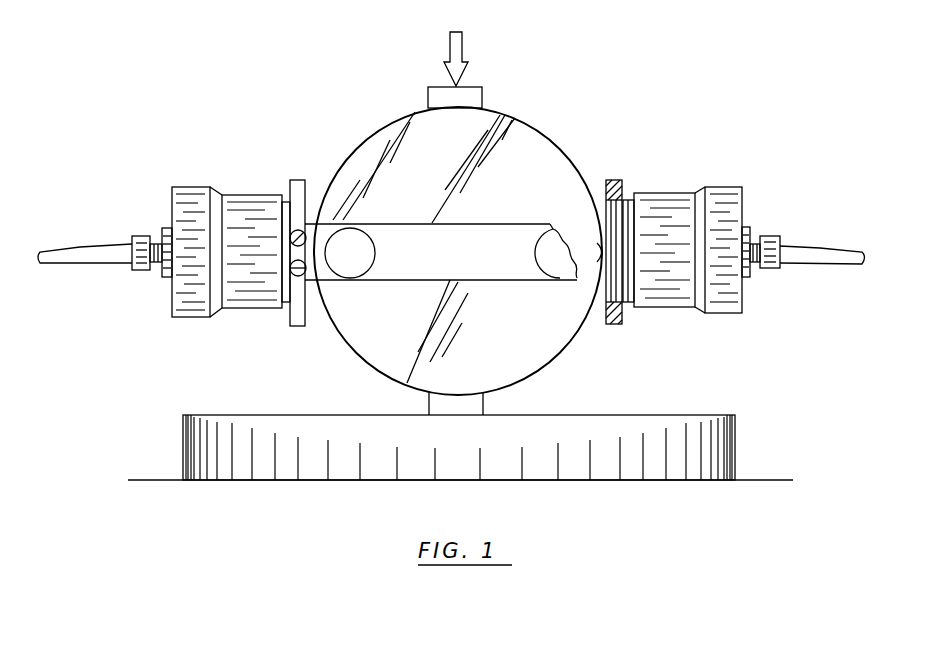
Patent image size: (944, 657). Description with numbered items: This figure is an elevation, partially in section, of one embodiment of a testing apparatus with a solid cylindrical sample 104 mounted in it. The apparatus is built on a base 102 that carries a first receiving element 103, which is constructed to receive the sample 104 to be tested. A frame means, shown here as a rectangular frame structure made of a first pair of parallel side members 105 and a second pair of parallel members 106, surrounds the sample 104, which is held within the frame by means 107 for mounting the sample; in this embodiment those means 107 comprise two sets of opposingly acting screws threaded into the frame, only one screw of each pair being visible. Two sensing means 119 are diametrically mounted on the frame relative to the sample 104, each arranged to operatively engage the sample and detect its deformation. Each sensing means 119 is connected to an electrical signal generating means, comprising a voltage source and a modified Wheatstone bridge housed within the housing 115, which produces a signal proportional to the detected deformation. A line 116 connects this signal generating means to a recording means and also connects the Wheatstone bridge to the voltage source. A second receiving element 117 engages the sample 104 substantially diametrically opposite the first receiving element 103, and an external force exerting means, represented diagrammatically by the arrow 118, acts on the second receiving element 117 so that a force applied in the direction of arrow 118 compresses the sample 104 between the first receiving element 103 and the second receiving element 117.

The base 102 is at (660, 414).
The first receiving element 103 is at (484, 403).
The solid cylindrical sample 104 is at (343, 353).
The first pair of parallel side members 105 is at (405, 222).
The second pair of parallel members 106 is at (299, 180).
The means for mounting the sample 107 is at (355, 258).
The housing 115 is at (668, 193).
The line 116 is at (825, 248).
The second receiving element 117 is at (438, 87).
The arrow 118 is at (462, 42).
The sensing means 119 is at (597, 243).